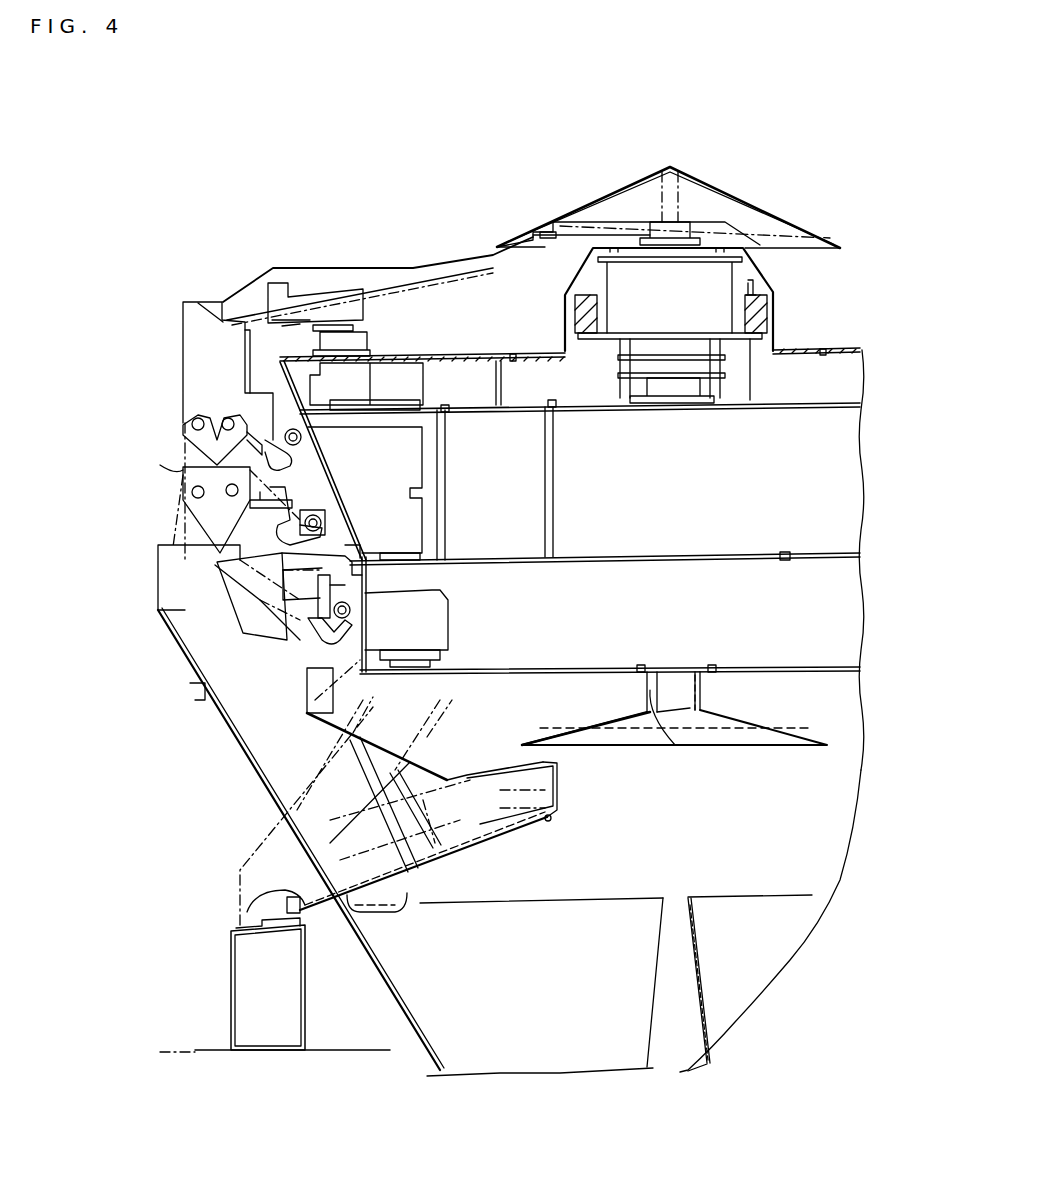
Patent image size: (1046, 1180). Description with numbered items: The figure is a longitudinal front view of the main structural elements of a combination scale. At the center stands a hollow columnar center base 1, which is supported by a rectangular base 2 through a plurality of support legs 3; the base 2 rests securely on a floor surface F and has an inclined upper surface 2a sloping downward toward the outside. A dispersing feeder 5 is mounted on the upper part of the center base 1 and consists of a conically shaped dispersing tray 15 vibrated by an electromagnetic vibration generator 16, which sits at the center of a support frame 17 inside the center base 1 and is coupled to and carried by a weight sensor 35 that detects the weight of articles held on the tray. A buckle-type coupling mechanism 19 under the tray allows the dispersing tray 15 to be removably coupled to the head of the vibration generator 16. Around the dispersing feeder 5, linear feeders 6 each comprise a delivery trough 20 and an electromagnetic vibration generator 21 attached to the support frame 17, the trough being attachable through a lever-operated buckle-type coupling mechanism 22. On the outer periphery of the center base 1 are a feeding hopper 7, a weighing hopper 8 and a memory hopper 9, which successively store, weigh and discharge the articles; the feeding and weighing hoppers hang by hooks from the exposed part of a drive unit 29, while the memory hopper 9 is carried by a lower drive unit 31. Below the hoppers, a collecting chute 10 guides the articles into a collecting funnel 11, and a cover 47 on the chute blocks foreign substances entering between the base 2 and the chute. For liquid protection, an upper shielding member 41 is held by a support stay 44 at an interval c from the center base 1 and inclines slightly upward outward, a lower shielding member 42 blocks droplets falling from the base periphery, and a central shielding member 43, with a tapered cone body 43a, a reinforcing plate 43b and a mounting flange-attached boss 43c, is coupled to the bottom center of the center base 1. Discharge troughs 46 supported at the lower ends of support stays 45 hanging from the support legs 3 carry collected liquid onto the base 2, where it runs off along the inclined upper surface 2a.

The center base 1 is at (476, 354).
The base 2 is at (231, 972).
The inclined upper surface 2a is at (255, 912).
The support legs 3 is at (246, 851).
The dispersing feeder 5 is at (729, 172).
The linear feeders 6 is at (372, 256).
The feeding hoppers 7 is at (185, 355).
The weighing hoppers 8 is at (183, 470).
The memory hoppers 9 is at (228, 589).
The collecting chutes 10 is at (248, 756).
The collecting funnels 11 is at (396, 1008).
The dispersing tray 15 is at (605, 200).
The electromagnetic vibration generator 16 is at (733, 278).
The support frame 17 is at (578, 410).
The buckle-type coupling mechanism 19 is at (582, 246).
The delivery trough 20 is at (306, 282).
The electromagnetic vibration generator 21 is at (420, 388).
The buckle-type coupling mechanism 22 is at (295, 341).
The drive unit 29 is at (425, 460).
The drive unit 31 is at (463, 625).
The weight sensor 35 is at (678, 412).
The upper shielding member 41 is at (300, 520).
The lower shielding member 42 is at (380, 742).
The central shielding member 43 is at (735, 716).
The body 43a is at (556, 737).
The reinforcing plate 43b is at (658, 746).
The mounting flange-attached boss 43c is at (645, 680).
The support stay 44 is at (367, 580).
The support stays 45 is at (425, 800).
The discharge trough 46 is at (560, 788).
The cover 47 is at (258, 886).
The interval c is at (352, 544).
The floor surface F is at (176, 1040).